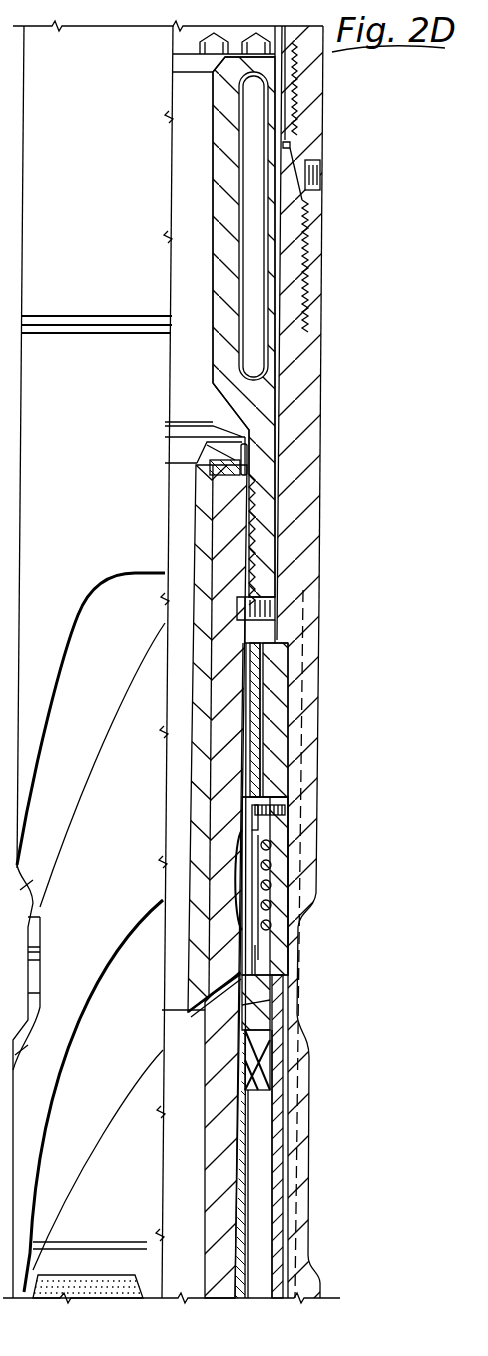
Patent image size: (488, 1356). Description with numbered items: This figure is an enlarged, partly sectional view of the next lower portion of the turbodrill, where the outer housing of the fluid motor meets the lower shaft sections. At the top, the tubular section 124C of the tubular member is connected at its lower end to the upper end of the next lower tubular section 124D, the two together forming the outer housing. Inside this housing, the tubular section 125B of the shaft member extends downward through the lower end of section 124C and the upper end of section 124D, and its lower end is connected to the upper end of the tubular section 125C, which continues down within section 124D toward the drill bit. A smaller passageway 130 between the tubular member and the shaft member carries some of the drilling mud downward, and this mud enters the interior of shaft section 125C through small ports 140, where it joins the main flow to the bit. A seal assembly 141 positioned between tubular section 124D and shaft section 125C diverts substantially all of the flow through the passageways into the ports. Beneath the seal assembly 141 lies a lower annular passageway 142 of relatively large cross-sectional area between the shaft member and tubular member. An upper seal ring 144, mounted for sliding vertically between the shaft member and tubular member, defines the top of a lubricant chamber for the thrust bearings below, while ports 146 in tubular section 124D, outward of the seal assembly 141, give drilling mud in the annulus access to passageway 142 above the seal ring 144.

The tubular section 124C is at (325, 97).
The tubular section 124D is at (313, 718).
The tubular section 125B is at (277, 427).
The tubular section 125C is at (242, 1173).
The passageway 130 is at (277, 463).
The ports 140 is at (217, 1007).
The seal assembly 141 is at (270, 975).
The lower annular passageway 142 is at (258, 1210).
The upper seal ring 144 is at (270, 1073).
The ports 146 is at (298, 992).